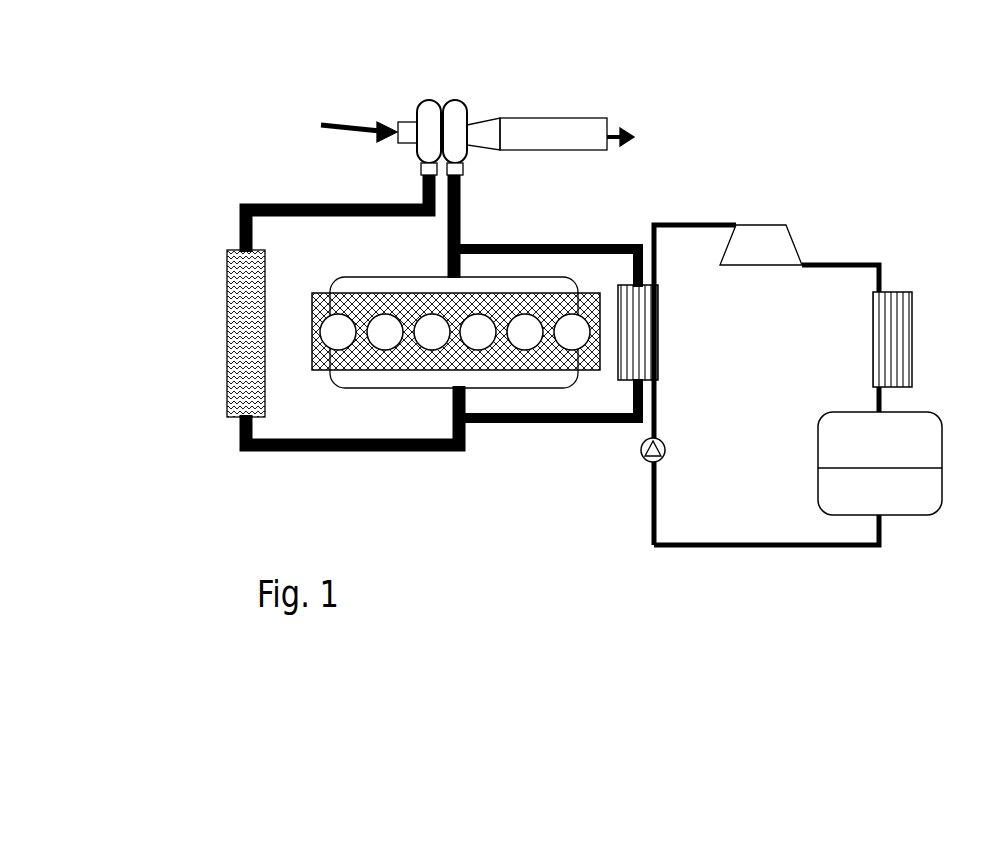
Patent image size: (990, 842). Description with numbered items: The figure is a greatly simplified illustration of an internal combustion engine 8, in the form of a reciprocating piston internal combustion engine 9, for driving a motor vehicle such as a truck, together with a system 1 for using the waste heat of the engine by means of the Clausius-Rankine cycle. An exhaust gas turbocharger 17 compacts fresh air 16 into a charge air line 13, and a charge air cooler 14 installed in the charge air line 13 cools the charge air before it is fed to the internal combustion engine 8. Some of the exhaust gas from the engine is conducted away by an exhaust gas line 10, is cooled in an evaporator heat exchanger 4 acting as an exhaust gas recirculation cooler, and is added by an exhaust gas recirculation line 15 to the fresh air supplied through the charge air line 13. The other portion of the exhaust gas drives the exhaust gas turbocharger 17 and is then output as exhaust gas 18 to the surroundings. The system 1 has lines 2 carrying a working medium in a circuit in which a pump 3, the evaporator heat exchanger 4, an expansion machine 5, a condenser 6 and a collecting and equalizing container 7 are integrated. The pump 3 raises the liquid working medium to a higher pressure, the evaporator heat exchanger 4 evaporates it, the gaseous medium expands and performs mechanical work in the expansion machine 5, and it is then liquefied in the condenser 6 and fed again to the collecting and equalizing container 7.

The system for using waste heat 1 is at (917, 184).
The lines 2 is at (721, 542).
The pump 3 is at (649, 462).
The evaporator heat exchanger 4 is at (625, 382).
The expansion machine 5 is at (757, 245).
The condenser 6 is at (908, 325).
The collecting and equalizing container 7 is at (902, 515).
The internal combustion engine 8 is at (377, 357).
The reciprocating piston internal combustion engine 9 is at (454, 332).
The exhaust gas line 10 is at (462, 196).
The charge air line 13 is at (245, 202).
The charge air cooler 14 is at (223, 250).
The exhaust gas recirculation line 15 is at (505, 423).
The fresh air 16 is at (328, 118).
The exhaust gas turbocharger 17 is at (432, 100).
The exhaust gas 18 is at (617, 127).